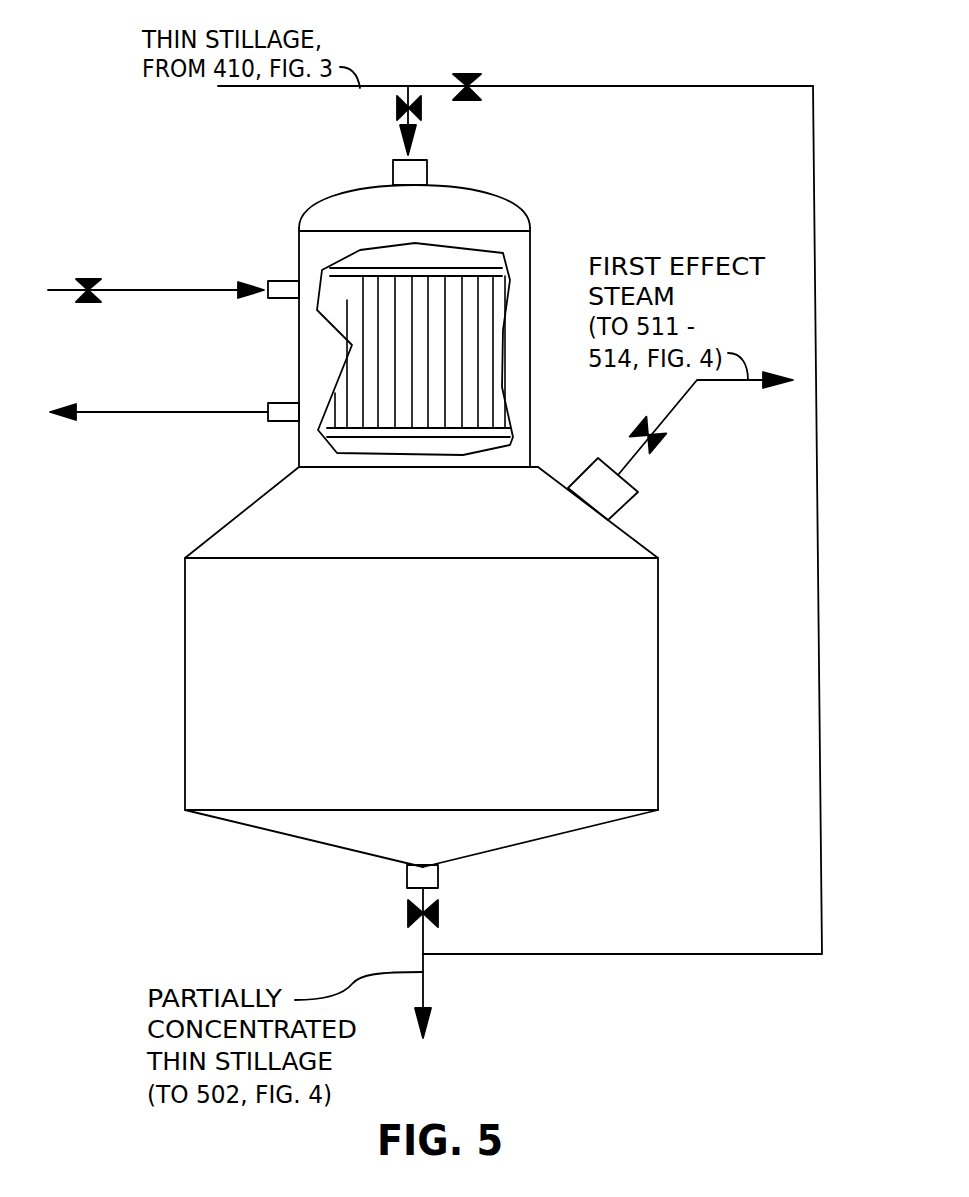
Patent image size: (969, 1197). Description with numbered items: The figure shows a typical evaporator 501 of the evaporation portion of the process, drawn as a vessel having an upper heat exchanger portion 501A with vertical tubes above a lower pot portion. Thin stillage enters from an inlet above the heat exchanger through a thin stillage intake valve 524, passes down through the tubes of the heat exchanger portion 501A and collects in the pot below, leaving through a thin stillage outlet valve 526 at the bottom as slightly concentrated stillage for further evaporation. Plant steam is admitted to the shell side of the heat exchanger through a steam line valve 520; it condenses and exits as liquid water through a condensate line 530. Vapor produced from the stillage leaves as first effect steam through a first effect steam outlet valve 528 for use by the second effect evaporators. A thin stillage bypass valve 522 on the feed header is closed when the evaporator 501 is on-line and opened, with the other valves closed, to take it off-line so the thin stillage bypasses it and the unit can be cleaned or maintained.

The evaporator 501 is at (447, 659).
The heat exchanger portion 501A is at (447, 303).
The steam line valve 520 is at (89, 304).
The thin stillage bypass valve 522 is at (467, 74).
The thin stillage intake valve 524 is at (396, 105).
The thin stillage outlet valve 526 is at (408, 913).
The first effect steam outlet valve 528 is at (648, 422).
The condensate line 530 is at (193, 418).